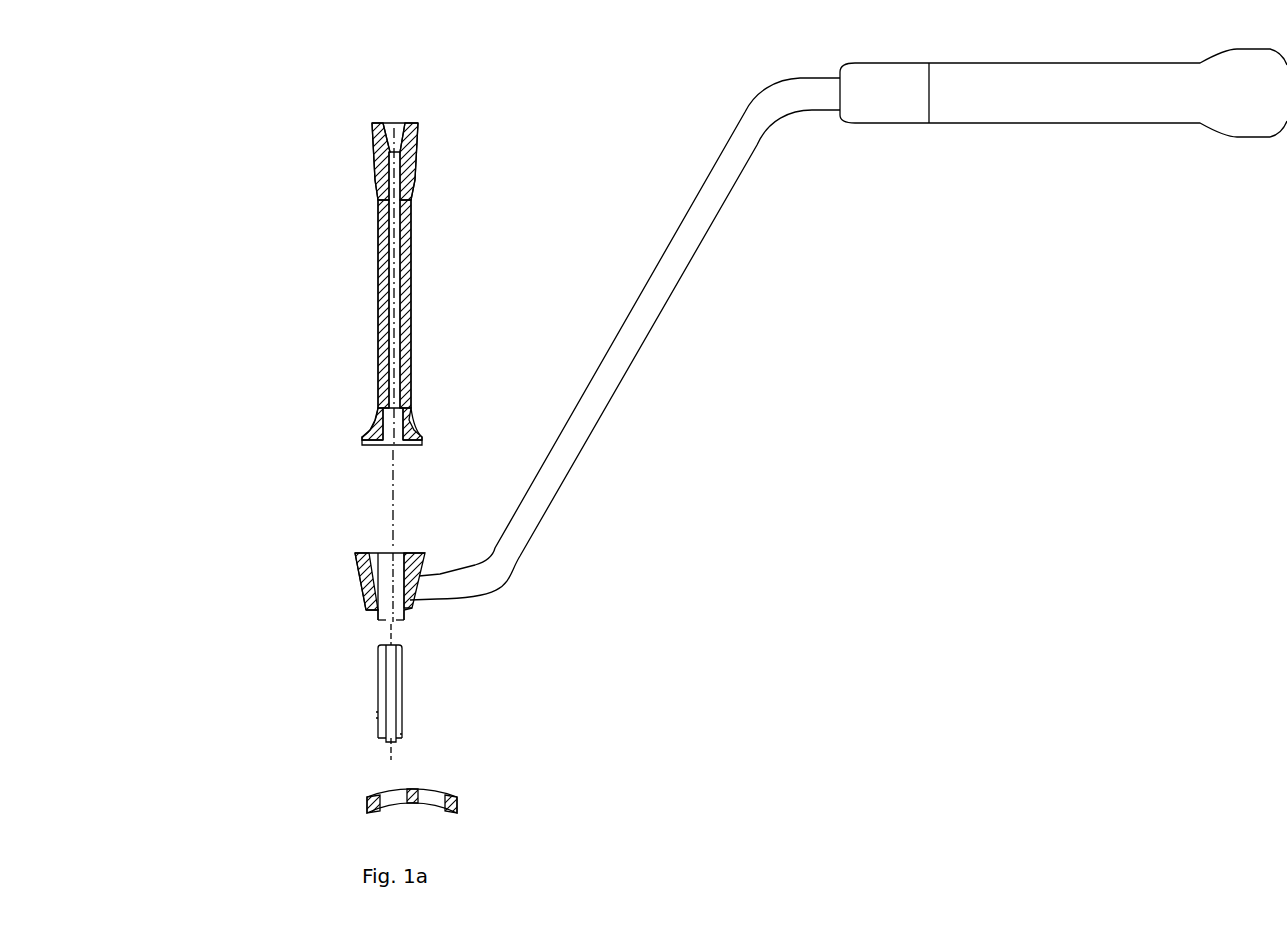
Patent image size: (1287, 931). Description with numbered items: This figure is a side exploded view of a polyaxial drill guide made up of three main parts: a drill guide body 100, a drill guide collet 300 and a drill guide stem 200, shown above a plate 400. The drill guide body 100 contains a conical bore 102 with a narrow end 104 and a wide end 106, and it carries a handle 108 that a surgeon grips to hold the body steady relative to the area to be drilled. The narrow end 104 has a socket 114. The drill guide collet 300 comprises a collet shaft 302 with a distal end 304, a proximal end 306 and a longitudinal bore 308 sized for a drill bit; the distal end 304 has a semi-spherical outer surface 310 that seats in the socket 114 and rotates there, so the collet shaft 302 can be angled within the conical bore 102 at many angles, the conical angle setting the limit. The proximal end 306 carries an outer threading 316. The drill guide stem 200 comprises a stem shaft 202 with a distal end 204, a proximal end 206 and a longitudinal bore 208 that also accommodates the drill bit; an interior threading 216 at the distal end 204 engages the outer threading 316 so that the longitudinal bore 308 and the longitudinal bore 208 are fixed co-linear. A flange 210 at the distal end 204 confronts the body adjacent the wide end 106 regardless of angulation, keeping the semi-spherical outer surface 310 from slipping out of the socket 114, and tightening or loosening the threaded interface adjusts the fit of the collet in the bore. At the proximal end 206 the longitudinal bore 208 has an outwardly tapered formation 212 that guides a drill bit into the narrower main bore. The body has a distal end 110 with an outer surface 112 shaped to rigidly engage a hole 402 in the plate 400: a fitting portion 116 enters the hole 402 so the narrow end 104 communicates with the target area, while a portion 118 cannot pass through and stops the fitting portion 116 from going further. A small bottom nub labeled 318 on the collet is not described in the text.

The drill guide body 100 is at (342, 540).
The conical bore 102 is at (368, 576).
The narrow end 104 is at (380, 627).
The wide end 106 is at (410, 548).
The handle 108 is at (912, 126).
The distal end 110 is at (362, 623).
The outer surface 112 is at (416, 612).
The socket 114 is at (401, 627).
The fitting portion 116 is at (370, 615).
The non-fitting portion 118 is at (357, 600).
The drill guide stem 200 is at (350, 122).
The stem shaft 202 is at (413, 222).
The distal end 204 is at (432, 426).
The proximal end 206 is at (433, 136).
The longitudinal bore 208 is at (400, 290).
The flange 210 is at (426, 443).
The formation 212 is at (393, 128).
The interior threading 216 is at (393, 415).
The drill guide collet 300 is at (353, 688).
The collet shaft 302 is at (402, 702).
The distal end 304 is at (427, 735).
The proximal end 306 is at (418, 640).
The longitudinal bore 308 is at (382, 715).
The semi-spherical outer surface 310 is at (403, 740).
The outer threading 316 is at (407, 655).
The bottom nub 318 is at (400, 732).
The plate 400 is at (467, 798).
The hole 402 is at (387, 798).